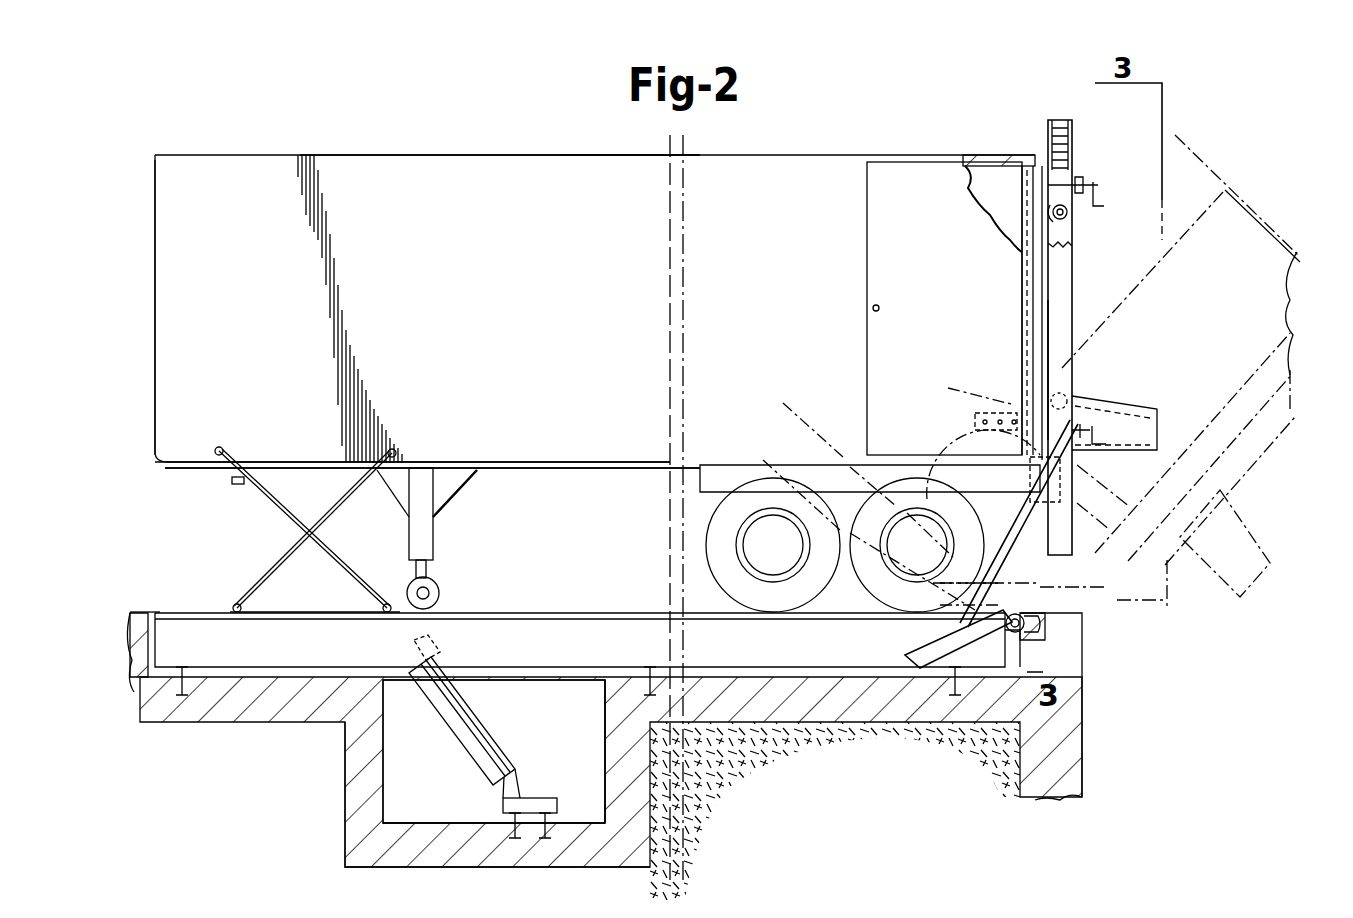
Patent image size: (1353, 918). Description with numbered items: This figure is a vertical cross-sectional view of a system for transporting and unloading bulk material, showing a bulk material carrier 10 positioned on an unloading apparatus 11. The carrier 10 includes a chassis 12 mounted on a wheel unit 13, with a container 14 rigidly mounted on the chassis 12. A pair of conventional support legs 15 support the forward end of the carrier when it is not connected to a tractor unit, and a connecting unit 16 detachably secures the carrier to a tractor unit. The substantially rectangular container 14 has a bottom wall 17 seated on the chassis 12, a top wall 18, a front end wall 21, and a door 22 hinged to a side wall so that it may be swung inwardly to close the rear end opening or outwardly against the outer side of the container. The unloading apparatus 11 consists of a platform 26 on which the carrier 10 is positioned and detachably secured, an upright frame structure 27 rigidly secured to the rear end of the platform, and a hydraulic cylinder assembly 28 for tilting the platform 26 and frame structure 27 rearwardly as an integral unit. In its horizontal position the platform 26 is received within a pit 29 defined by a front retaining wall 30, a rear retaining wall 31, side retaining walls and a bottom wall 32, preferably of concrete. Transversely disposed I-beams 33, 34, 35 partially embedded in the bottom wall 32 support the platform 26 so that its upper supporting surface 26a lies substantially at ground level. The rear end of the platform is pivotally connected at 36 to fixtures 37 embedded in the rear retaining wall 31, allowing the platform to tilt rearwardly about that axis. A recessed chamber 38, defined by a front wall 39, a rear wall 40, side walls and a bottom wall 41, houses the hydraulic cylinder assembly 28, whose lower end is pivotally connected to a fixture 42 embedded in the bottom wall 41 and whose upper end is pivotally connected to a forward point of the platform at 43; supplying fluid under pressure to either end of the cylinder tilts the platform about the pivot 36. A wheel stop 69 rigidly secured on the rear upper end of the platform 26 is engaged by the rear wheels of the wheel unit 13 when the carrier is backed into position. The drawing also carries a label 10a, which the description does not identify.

The bulk material carrier 10 is at (795, 145).
The scissor linkage 10a is at (322, 518).
The unloading apparatus 11 is at (1083, 254).
The chassis 12 is at (560, 468).
The wheel unit 13 is at (706, 534).
The container 14 is at (436, 145).
The support legs 15 is at (433, 536).
The connecting unit 16 is at (236, 492).
The bottom wall 17 is at (732, 460).
The top wall 18 is at (622, 153).
The front end wall 21 is at (155, 325).
The door 22 is at (882, 270).
The platform 26 is at (553, 616).
The upper supporting surface 26a is at (343, 612).
The upright frame structure 27 is at (1085, 364).
The hydraulic cylinder assembly 28 is at (484, 722).
The pit 29 is at (165, 612).
The front retaining wall 30 is at (148, 652).
The rear retaining wall 31 is at (1070, 665).
The bottom wall 32 is at (820, 722).
The I-beam 33 is at (200, 672).
The I-beam 34 is at (687, 665).
The I-beam 35 is at (925, 668).
The pivotal connection 36 is at (1028, 622).
The fixtures 37 is at (1048, 642).
The recessed chamber 38 is at (446, 775).
The front wall 39 is at (345, 804).
The rear wall 40 is at (605, 768).
The bottom wall 41 is at (452, 823).
The fixture 42 is at (557, 805).
The pivotal connection 43 is at (442, 640).
The wheel stop 69 is at (1003, 540).